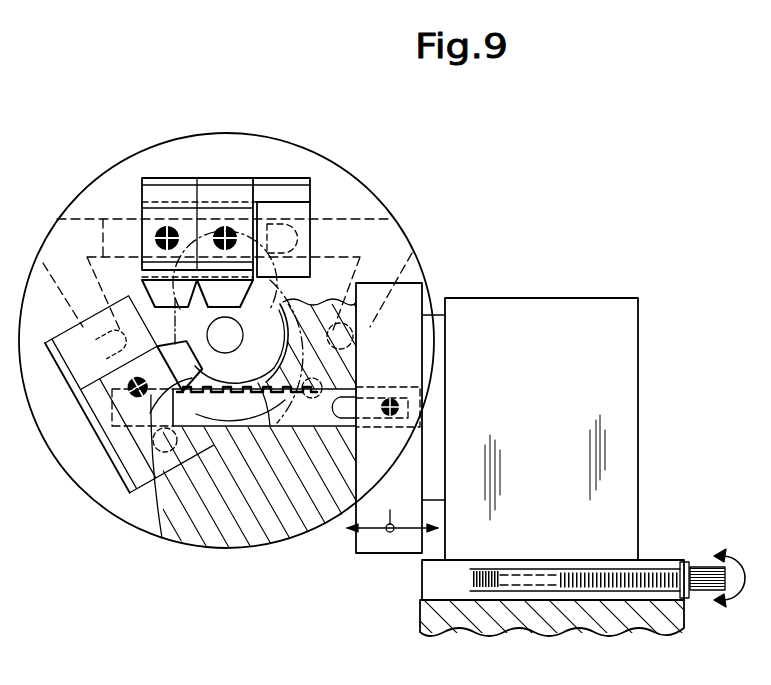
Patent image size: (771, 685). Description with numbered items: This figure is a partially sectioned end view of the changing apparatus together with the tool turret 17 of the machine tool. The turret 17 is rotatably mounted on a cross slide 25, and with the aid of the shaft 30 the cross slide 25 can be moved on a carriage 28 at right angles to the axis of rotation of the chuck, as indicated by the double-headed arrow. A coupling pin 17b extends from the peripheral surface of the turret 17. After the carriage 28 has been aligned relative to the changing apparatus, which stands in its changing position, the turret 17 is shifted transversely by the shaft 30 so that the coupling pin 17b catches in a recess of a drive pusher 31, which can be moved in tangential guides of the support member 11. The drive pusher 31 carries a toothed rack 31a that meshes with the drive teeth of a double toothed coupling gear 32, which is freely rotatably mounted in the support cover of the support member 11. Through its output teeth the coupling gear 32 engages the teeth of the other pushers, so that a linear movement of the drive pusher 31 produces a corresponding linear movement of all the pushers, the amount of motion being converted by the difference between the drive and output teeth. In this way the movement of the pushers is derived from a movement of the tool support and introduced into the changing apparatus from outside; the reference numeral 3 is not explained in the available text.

The support member 11 is at (352, 200).
The tool turret head 3 is at (182, 352).
The double toothed coupling gear 32 is at (231, 385).
The drive pusher 31 is at (330, 470).
The toothed rack 31a is at (283, 410).
The turret 17 is at (390, 534).
The coupling pin 17b is at (393, 403).
The cross slide 25 is at (613, 358).
The shaft 30 is at (653, 570).
The carriage 28 is at (667, 613).